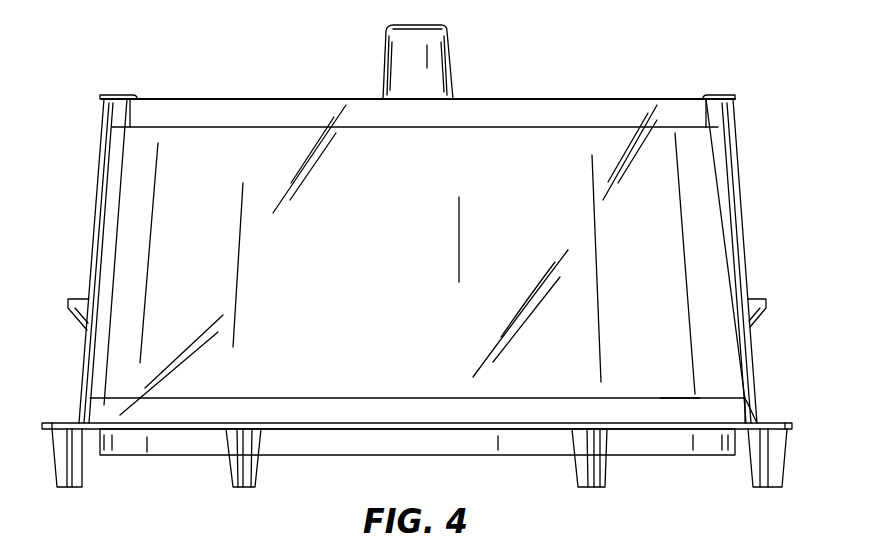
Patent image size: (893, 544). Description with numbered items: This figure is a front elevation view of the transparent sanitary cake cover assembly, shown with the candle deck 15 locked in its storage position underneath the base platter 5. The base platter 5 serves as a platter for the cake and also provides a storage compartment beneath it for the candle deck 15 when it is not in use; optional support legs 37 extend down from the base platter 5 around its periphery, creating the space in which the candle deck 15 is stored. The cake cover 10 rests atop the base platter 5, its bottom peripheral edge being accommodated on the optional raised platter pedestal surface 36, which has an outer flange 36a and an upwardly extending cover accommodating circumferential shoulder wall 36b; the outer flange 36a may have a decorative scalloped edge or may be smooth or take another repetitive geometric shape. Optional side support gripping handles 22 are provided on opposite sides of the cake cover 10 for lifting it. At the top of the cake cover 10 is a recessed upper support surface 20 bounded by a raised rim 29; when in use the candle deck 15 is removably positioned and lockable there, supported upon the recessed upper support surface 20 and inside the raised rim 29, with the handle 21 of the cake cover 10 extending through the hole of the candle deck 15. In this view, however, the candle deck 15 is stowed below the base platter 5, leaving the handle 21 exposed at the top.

The cake cover 10 is at (384, 265).
The recessed upper support surface 20 is at (588, 127).
The handle 21 is at (435, 73).
The raised rim 29 is at (713, 107).
The side support gripping handles 22 is at (80, 302).
The raised platter pedestal surface 36 is at (651, 400).
The outer flange 36a is at (758, 421).
The cover accommodating circumferential shoulder wall 36b is at (685, 415).
The base platter 5 is at (64, 424).
The candle deck 15 is at (625, 445).
The support legs 37 is at (85, 478).